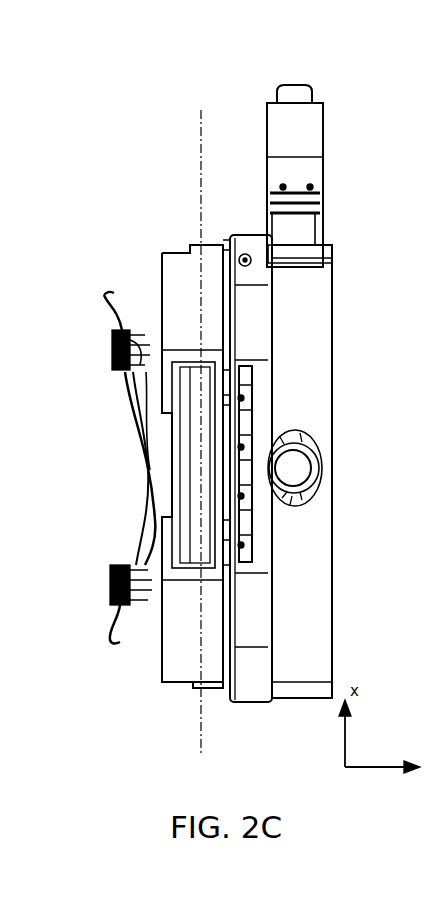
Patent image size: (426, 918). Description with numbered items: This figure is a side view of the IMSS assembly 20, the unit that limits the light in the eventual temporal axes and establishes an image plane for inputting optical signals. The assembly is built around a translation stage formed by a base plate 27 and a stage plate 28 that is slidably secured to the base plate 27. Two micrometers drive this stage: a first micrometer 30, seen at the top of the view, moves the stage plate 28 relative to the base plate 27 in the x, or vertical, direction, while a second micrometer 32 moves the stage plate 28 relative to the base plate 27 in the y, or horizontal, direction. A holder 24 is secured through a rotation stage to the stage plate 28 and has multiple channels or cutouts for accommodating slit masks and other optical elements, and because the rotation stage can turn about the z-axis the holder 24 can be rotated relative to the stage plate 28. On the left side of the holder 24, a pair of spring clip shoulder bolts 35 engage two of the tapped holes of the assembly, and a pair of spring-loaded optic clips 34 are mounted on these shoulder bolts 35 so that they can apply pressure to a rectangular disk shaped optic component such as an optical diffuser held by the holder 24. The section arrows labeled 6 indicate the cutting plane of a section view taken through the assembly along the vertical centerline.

The IMSS assembly 20 is at (103, 72).
The section line 6 is at (201, 140).
The holder 24 is at (178, 253).
The base plate 27 is at (318, 295).
The stage plate 28 is at (243, 235).
The first micrometer 30 is at (312, 108).
The second micrometer 32 is at (315, 469).
The spring-loaded optic clips 34 is at (110, 292).
The spring clip shoulder bolts 35 is at (112, 333).